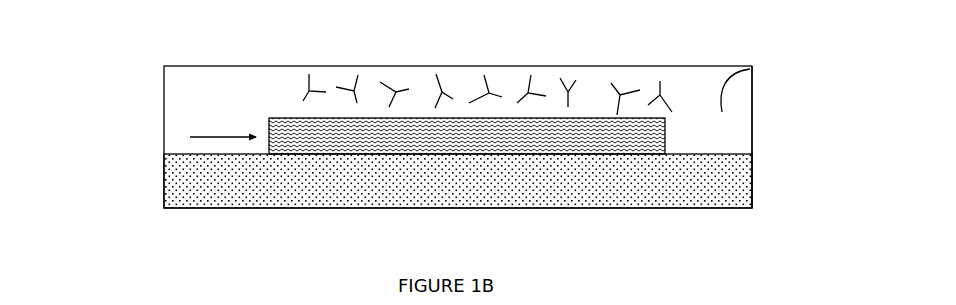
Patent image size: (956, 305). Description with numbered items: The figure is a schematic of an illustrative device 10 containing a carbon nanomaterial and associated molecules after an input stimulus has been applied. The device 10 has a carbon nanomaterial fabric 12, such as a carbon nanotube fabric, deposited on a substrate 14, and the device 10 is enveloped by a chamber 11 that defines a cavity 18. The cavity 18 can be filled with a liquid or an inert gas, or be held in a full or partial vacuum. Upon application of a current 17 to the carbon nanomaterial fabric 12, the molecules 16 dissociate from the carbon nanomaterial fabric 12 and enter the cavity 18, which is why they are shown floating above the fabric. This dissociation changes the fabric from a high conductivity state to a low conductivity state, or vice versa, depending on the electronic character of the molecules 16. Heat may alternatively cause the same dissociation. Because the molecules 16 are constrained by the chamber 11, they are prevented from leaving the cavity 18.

The device 10 is at (149, 71).
The chamber 11 is at (752, 118).
The carbon nanomaterial fabric 12 is at (269, 148).
The substrate 14 is at (750, 203).
The molecules 16 is at (358, 77).
The current 17 is at (223, 115).
The cavity 18 is at (755, 68).